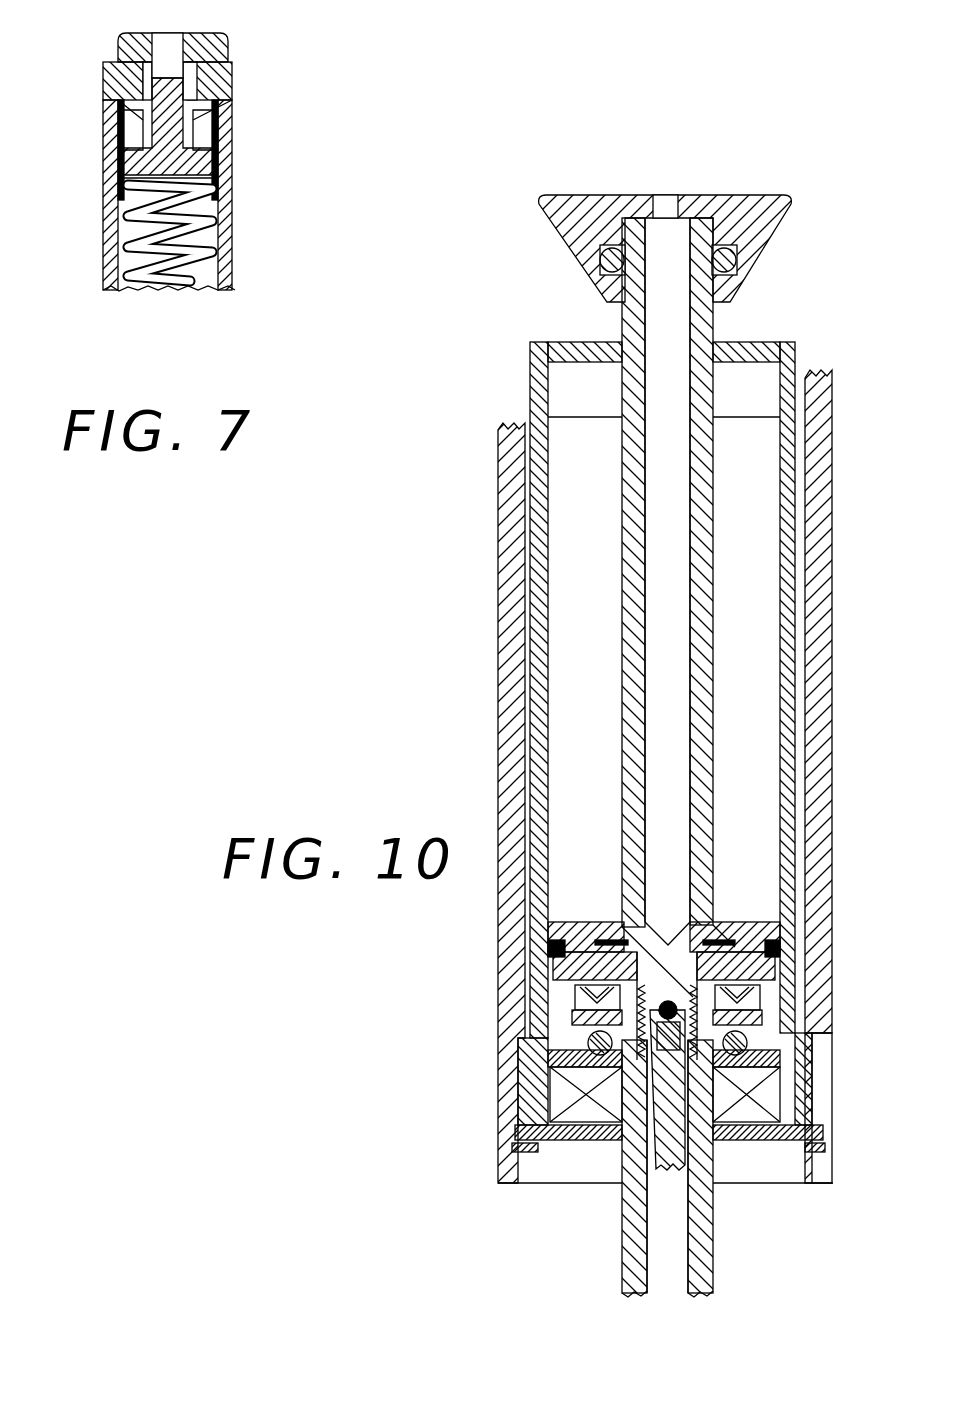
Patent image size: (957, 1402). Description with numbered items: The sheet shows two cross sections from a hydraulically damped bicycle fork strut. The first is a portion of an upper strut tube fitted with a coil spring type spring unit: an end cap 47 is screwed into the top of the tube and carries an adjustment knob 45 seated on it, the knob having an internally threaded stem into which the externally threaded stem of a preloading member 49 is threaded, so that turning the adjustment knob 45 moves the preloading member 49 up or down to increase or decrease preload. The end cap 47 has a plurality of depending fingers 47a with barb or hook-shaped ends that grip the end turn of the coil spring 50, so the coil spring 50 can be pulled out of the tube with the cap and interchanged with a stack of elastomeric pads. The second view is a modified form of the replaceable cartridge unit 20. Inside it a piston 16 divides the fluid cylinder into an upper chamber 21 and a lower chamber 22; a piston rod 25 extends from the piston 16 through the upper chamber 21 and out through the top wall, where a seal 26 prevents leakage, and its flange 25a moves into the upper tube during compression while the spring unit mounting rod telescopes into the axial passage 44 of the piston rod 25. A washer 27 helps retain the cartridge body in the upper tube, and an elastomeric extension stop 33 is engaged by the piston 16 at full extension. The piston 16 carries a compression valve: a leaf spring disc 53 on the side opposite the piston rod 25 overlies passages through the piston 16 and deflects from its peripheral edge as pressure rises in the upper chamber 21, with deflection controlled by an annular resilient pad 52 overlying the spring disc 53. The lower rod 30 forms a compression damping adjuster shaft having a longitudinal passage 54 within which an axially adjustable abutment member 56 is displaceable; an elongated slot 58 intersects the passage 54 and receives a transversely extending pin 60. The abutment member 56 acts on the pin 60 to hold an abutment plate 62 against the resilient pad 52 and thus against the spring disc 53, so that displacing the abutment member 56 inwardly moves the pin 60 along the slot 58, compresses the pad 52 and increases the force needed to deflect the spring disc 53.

In FIG. 7, the end cap 47 is at (103, 68).
In FIG. 7, the adjustment knob 45 is at (212, 50).
In FIG. 7, the preloading member 49 is at (213, 168).
In FIG. 7, the depending fingers 47a is at (120, 205).
In FIG. 7, the coil spring 50 is at (160, 282).
In FIG. 10, the replaceable cartridge unit 20 is at (528, 385).
In FIG. 10, the upper chamber 21 is at (764, 646).
In FIG. 10, the flange 25a is at (729, 197).
In FIG. 10, the piston rod 25 is at (716, 325).
In FIG. 10, the axial passage 44 is at (656, 519).
In FIG. 10, the piston 16 is at (570, 922).
In FIG. 10, the leaf spring disc 53 is at (772, 985).
In FIG. 10, the lower chamber 22 is at (770, 992).
In FIG. 10, the annular resilient pad 52 is at (585, 1000).
In FIG. 10, the abutment plate 62 is at (585, 1013).
In FIG. 10, the elongated slot 58 is at (770, 1012).
In FIG. 10, the elastomeric extension stop 33 is at (605, 1040).
In FIG. 10, the transversely extending pin 60 is at (780, 1085).
In FIG. 10, the washer 27 is at (556, 1145).
In FIG. 10, the seal 26 is at (812, 1147).
In FIG. 10, the rod 30 is at (713, 1238).
In FIG. 10, the axially adjustable abutment member 56 is at (660, 1175).
In FIG. 10, the longitudinal passage 54 is at (656, 1295).